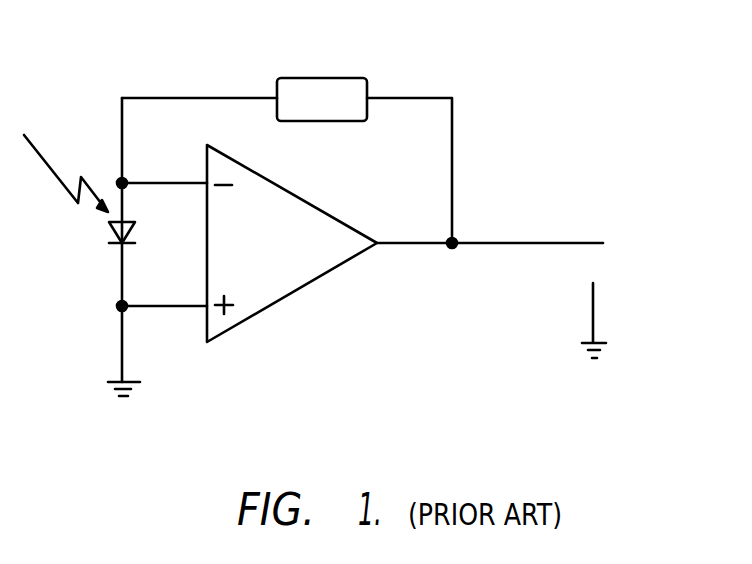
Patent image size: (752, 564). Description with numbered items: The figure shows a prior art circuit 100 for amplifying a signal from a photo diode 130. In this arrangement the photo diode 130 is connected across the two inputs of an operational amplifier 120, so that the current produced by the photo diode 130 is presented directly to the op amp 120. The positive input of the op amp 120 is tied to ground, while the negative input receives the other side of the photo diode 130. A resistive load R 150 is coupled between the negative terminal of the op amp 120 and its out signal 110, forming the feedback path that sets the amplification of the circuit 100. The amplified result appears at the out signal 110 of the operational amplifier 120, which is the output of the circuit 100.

The circuit 100 is at (585, 55).
The out signal 110 is at (593, 242).
The operational amplifier 120 is at (312, 203).
The photo diode 130 is at (110, 233).
The resistive load R 150 is at (357, 77).